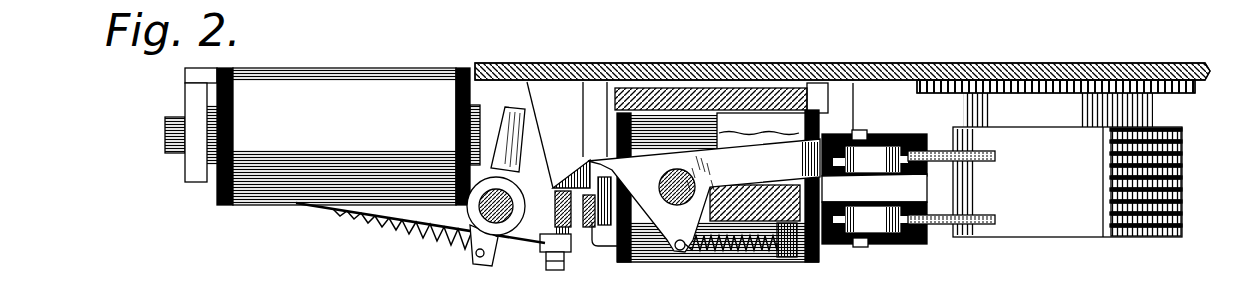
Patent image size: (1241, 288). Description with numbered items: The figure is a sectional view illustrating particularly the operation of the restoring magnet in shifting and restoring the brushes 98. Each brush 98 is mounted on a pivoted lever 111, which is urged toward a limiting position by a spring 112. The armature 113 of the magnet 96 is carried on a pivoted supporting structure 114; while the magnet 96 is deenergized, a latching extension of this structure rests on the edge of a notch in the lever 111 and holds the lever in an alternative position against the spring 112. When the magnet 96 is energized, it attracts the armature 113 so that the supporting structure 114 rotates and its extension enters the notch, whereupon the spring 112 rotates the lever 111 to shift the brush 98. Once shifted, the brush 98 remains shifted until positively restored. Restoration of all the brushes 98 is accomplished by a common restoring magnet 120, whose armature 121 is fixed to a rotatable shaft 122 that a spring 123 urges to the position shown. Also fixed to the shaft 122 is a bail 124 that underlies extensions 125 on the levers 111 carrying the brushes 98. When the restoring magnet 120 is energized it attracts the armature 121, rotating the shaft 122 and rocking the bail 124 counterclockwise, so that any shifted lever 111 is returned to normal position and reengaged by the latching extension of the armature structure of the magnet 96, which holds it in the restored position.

The magnet 96 is at (652, 258).
The brush 98 is at (935, 152).
The pivoted lever 111 is at (740, 157).
The spring 112 is at (753, 254).
The armature 113 is at (603, 177).
The supporting structure 114 is at (598, 185).
The restoring magnet 120 is at (332, 90).
The armature 121 is at (503, 110).
The rotatable shaft 122 is at (497, 222).
The spring 123 is at (420, 240).
The bail 124 is at (570, 215).
The extension 125 is at (581, 180).